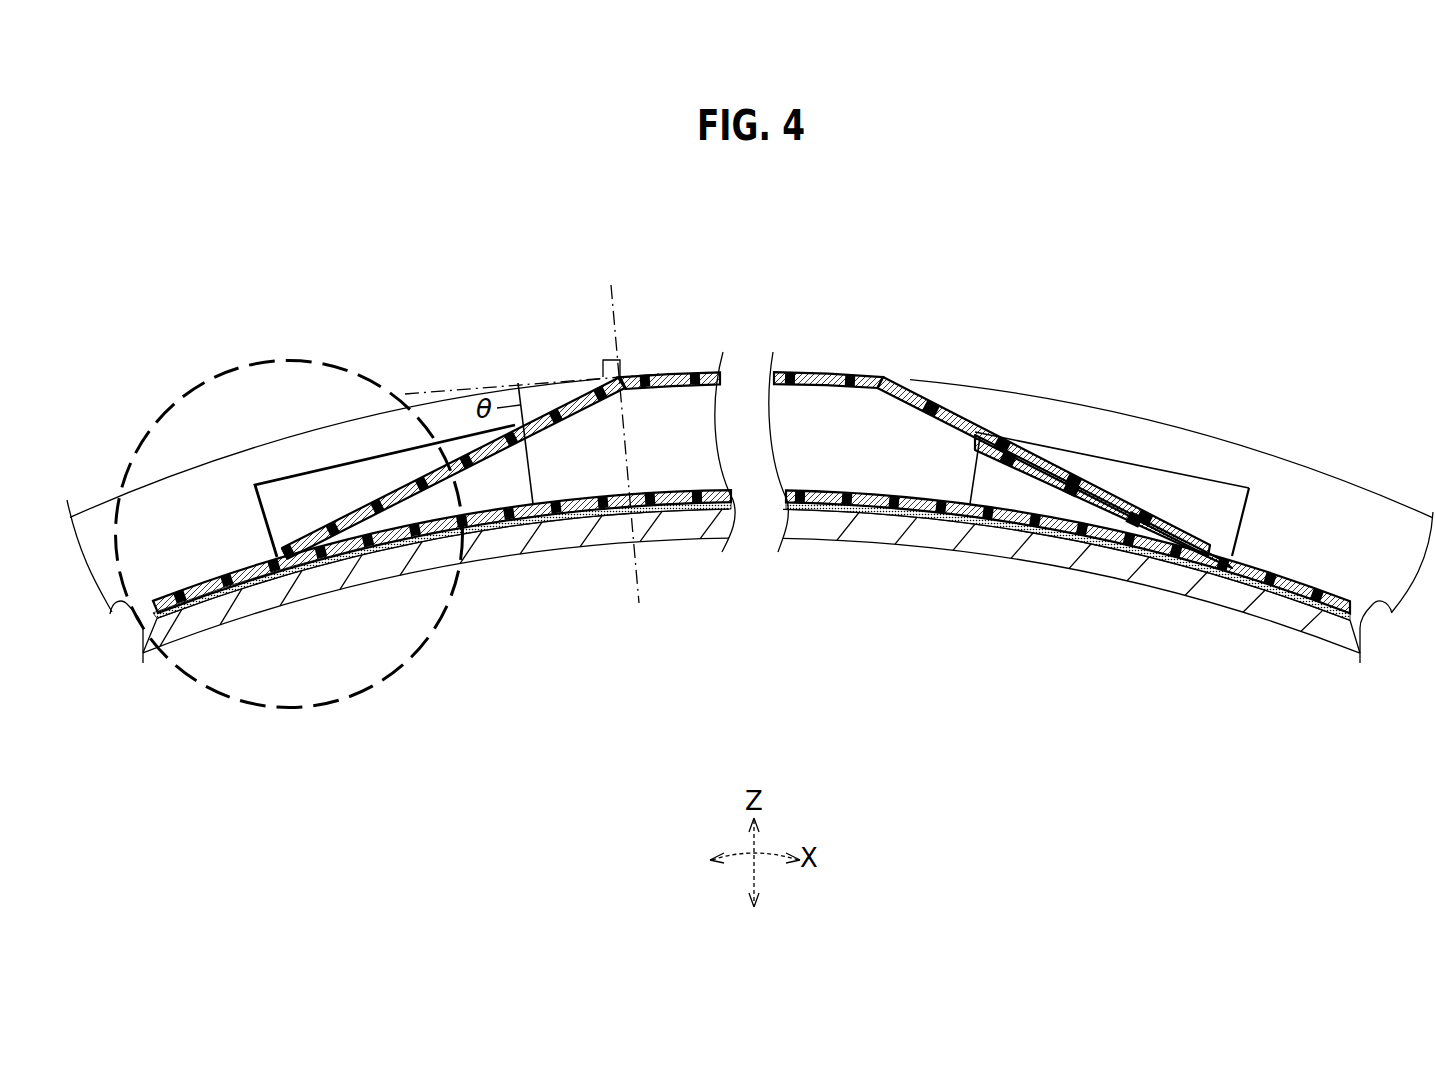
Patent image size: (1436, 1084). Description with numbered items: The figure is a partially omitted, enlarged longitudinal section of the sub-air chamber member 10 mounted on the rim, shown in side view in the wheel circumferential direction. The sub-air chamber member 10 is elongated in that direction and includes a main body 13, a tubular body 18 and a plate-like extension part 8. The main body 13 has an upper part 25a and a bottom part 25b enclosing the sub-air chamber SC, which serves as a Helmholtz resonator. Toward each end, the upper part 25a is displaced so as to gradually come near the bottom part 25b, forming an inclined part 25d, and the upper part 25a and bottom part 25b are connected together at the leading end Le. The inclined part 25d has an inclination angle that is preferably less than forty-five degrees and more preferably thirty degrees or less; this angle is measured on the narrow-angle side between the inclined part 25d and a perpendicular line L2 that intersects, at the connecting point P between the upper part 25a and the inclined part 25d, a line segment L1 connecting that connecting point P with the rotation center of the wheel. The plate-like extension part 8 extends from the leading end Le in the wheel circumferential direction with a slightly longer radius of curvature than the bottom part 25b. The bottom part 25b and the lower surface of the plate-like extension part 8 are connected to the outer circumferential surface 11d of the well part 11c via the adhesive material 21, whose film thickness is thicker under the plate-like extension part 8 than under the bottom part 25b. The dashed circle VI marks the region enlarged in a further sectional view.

The plate-like extension part 8 is at (177, 590).
The sub-air chamber member 10 is at (751, 438).
The main body 13 is at (751, 438).
The tubular body 18 is at (293, 493).
The adhesive material 21 is at (217, 603).
The upper part 25a is at (680, 372).
The bottom part 25b is at (672, 505).
The inclined part 25d is at (383, 493).
The well part 11c is at (112, 612).
The outer circumferential surface 11d is at (1392, 612).
The line segment L1 is at (622, 311).
The perpendicular line L2 is at (446, 390).
The connecting point P is at (622, 375).
The sub-air chamber SC is at (692, 456).
The leading end Le is at (264, 555).
The VI-VI line VI is at (412, 666).